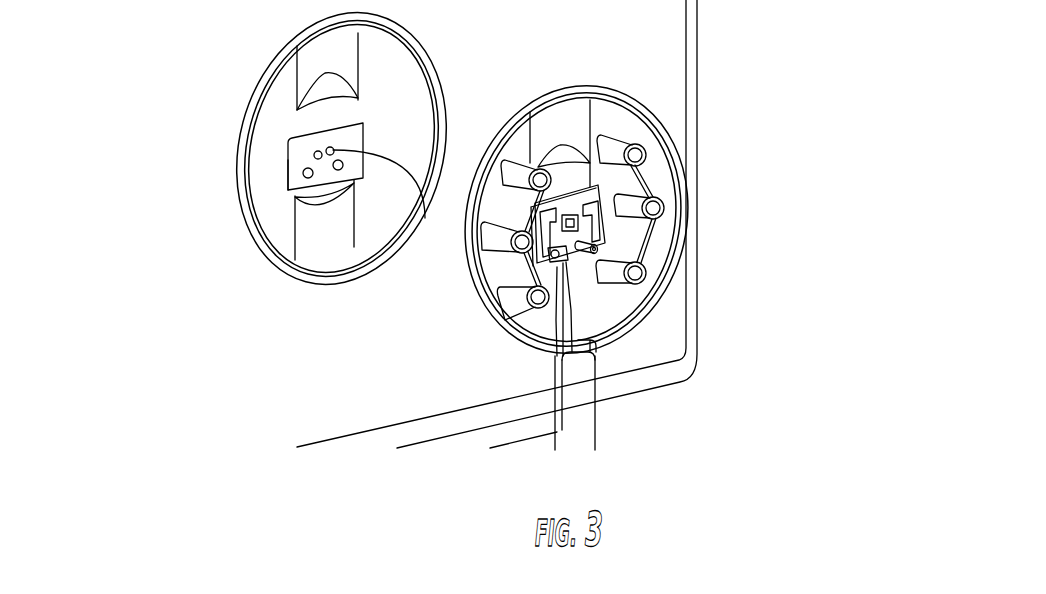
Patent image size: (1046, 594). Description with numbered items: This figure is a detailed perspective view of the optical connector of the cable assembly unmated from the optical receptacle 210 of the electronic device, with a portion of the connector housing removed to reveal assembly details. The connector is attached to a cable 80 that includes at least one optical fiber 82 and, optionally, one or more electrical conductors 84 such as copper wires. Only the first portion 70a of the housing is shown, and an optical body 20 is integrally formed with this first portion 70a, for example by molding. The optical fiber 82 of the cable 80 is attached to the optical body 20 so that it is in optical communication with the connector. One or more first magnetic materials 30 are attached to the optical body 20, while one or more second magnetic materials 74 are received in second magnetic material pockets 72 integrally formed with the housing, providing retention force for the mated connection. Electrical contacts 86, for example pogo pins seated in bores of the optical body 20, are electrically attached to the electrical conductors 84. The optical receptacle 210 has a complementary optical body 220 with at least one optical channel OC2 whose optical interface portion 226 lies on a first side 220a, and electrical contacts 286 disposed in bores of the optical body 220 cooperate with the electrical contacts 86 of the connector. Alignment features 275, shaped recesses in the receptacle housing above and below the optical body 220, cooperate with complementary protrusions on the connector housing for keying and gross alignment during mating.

The optical receptacle 210 is at (382, 79).
The alignment features 275 is at (308, 50).
The receptacle optical body 220 is at (297, 145).
The first side 220a is at (293, 170).
The optical interface portion 226 is at (322, 145).
The electrical contacts 286 is at (336, 169).
The optical channel OC2 is at (390, 202).
The first portion of housing 70a is at (666, 153).
The second magnetic material pockets 72 is at (642, 149).
The second magnetic materials 74 is at (628, 140).
The optical body 20 is at (567, 200).
The first magnetic materials 30 is at (643, 217).
The electrical contacts 86 is at (646, 272).
The electrical conductors 84 is at (576, 310).
The optical fiber 82 is at (588, 283).
The cable 80 is at (583, 428).